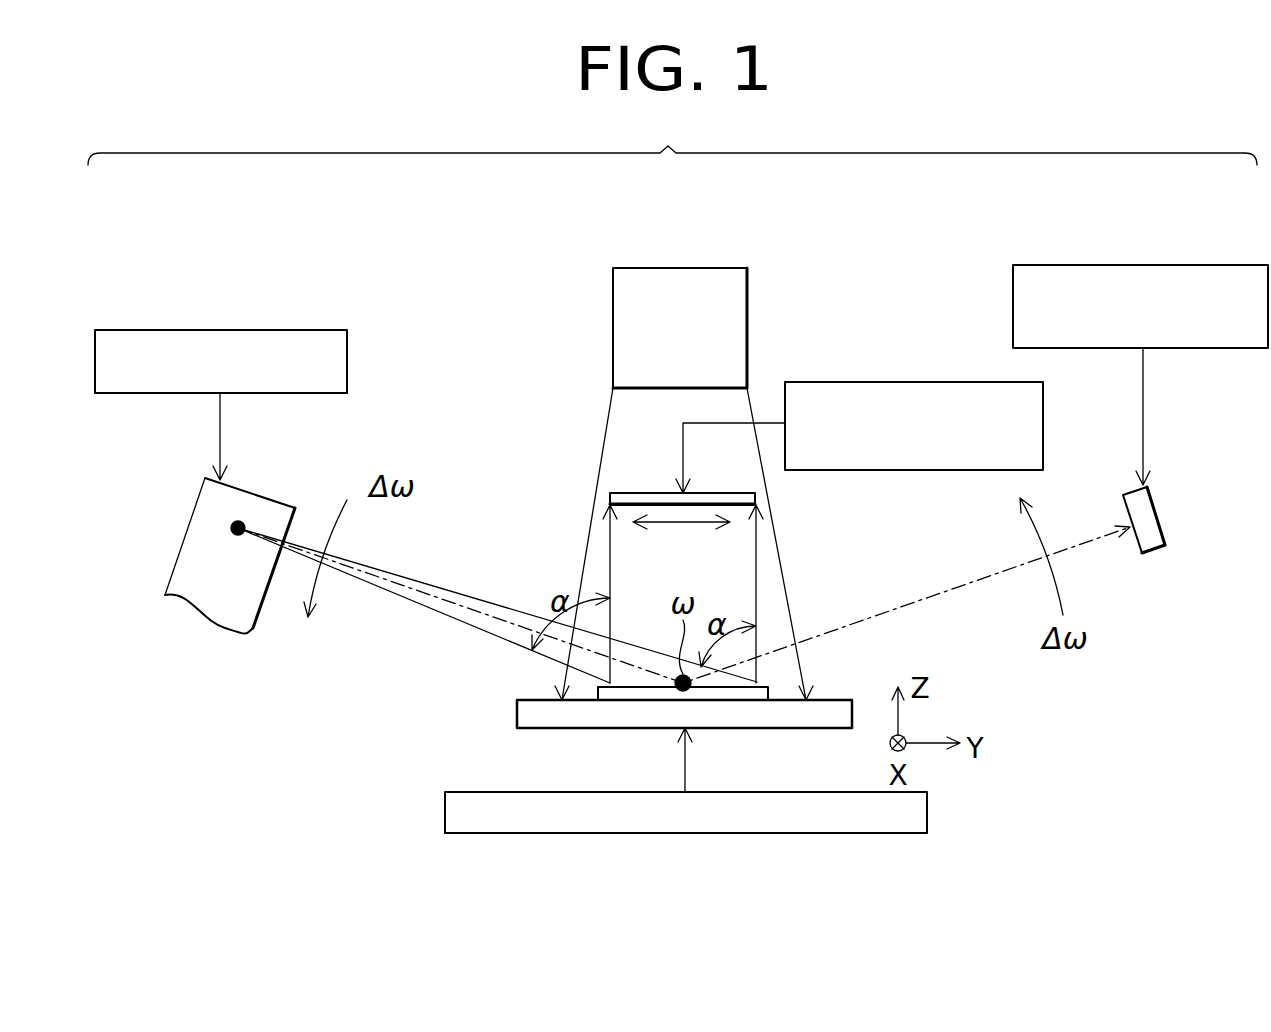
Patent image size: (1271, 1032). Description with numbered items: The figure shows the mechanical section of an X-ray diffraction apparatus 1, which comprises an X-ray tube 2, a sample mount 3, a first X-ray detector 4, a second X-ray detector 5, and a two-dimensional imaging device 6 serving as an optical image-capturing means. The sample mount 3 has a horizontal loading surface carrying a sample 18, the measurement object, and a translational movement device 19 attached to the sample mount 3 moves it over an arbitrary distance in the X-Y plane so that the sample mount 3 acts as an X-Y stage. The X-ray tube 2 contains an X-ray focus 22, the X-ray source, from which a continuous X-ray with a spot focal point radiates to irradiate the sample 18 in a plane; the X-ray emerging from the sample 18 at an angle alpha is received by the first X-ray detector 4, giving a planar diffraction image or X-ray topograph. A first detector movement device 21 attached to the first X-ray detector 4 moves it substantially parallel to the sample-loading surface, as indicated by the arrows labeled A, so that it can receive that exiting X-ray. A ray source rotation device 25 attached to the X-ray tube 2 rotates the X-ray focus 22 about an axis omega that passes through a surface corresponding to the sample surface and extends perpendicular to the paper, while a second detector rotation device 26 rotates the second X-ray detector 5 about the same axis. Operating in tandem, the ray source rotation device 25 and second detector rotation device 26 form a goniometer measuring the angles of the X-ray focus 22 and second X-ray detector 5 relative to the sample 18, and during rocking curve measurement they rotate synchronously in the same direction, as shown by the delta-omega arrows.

The X-ray diffraction apparatus 1 is at (672, 139).
The X-ray tube 2 is at (280, 495).
The sample mount 3 is at (517, 710).
The first X-ray detector 4 is at (648, 493).
The second X-ray detector 5 is at (1158, 513).
The two-dimensional imaging device 6 is at (675, 285).
The sample 18 is at (775, 687).
The translational movement device 19 is at (683, 835).
The first detector movement device 21 is at (912, 382).
The X-ray focus 22 is at (232, 528).
The ray source rotation device 25 is at (218, 330).
The second detector rotation device 26 is at (1147, 263).